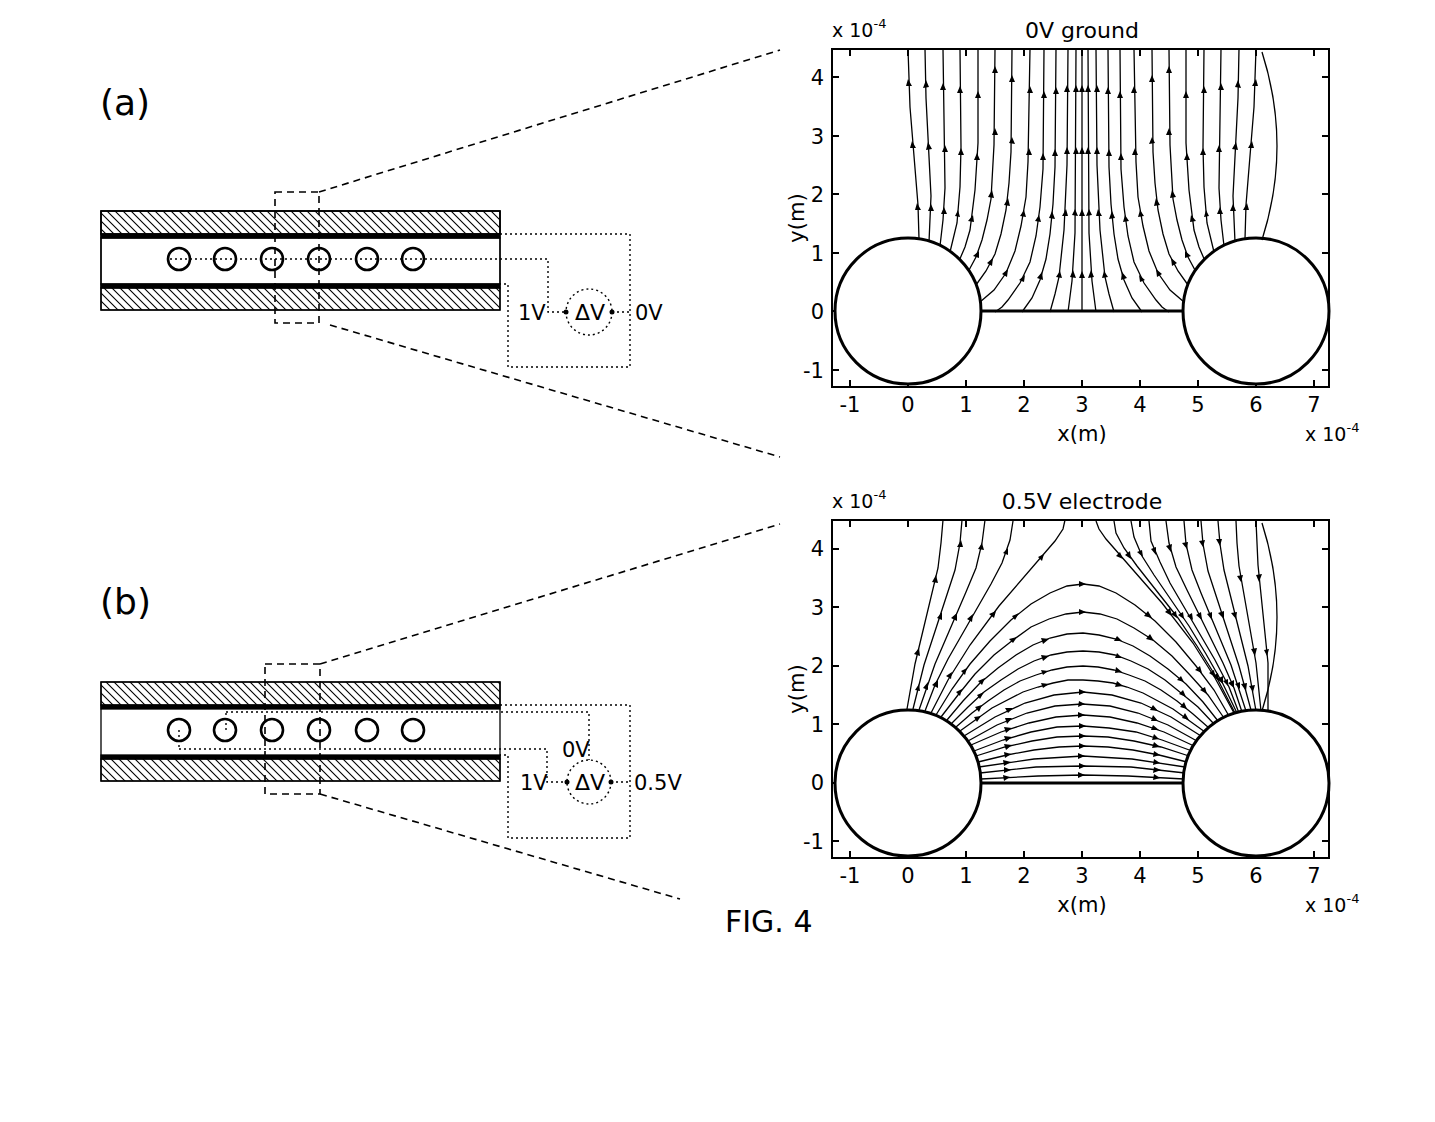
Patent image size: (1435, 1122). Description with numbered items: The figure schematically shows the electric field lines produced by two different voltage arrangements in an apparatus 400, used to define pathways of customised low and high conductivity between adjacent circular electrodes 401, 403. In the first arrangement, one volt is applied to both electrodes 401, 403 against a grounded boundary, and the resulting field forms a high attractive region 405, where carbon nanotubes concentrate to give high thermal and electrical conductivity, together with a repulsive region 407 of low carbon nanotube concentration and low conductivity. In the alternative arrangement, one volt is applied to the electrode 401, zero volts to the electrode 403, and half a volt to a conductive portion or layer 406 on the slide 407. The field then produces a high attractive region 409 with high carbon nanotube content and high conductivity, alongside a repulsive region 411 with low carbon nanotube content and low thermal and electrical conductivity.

The apparatus 400 is at (206, 180).
The electrode 401 is at (272, 270).
The electrode 403 is at (319, 270).
The attractive region 405 is at (1277, 95).
The conductive portion or layer 406 is at (500, 246).
The repulsive region 407 is at (497, 211).
The attractive region 409 is at (1058, 757).
The repulsive region 411 is at (1277, 566).